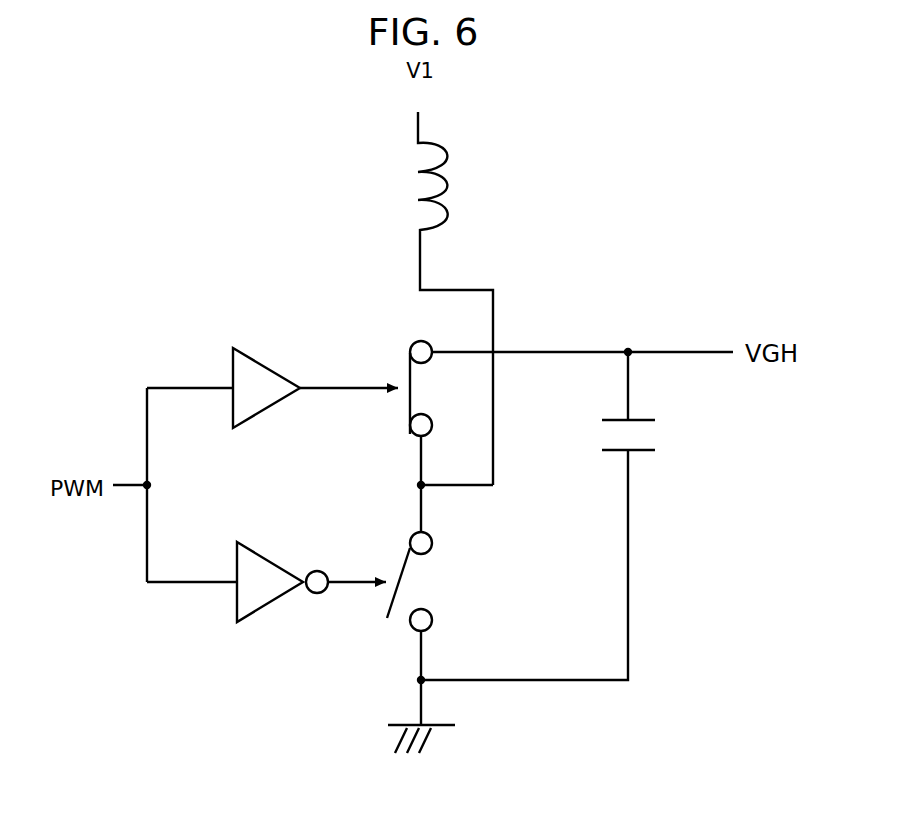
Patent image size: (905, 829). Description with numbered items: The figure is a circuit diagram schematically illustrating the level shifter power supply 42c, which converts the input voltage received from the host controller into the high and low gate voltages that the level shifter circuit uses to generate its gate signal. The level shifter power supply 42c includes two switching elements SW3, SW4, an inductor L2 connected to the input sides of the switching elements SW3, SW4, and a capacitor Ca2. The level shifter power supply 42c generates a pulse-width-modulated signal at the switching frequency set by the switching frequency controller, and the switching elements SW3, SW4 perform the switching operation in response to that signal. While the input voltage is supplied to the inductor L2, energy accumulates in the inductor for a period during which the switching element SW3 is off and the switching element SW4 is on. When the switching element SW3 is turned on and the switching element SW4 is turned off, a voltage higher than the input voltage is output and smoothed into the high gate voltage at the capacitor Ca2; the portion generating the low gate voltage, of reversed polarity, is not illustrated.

The level shifter power supply 42c is at (131, 265).
The inductor L2 is at (482, 186).
The switching element SW3 is at (396, 371).
The switching element SW4 is at (392, 562).
The capacitor Ca2 is at (665, 430).